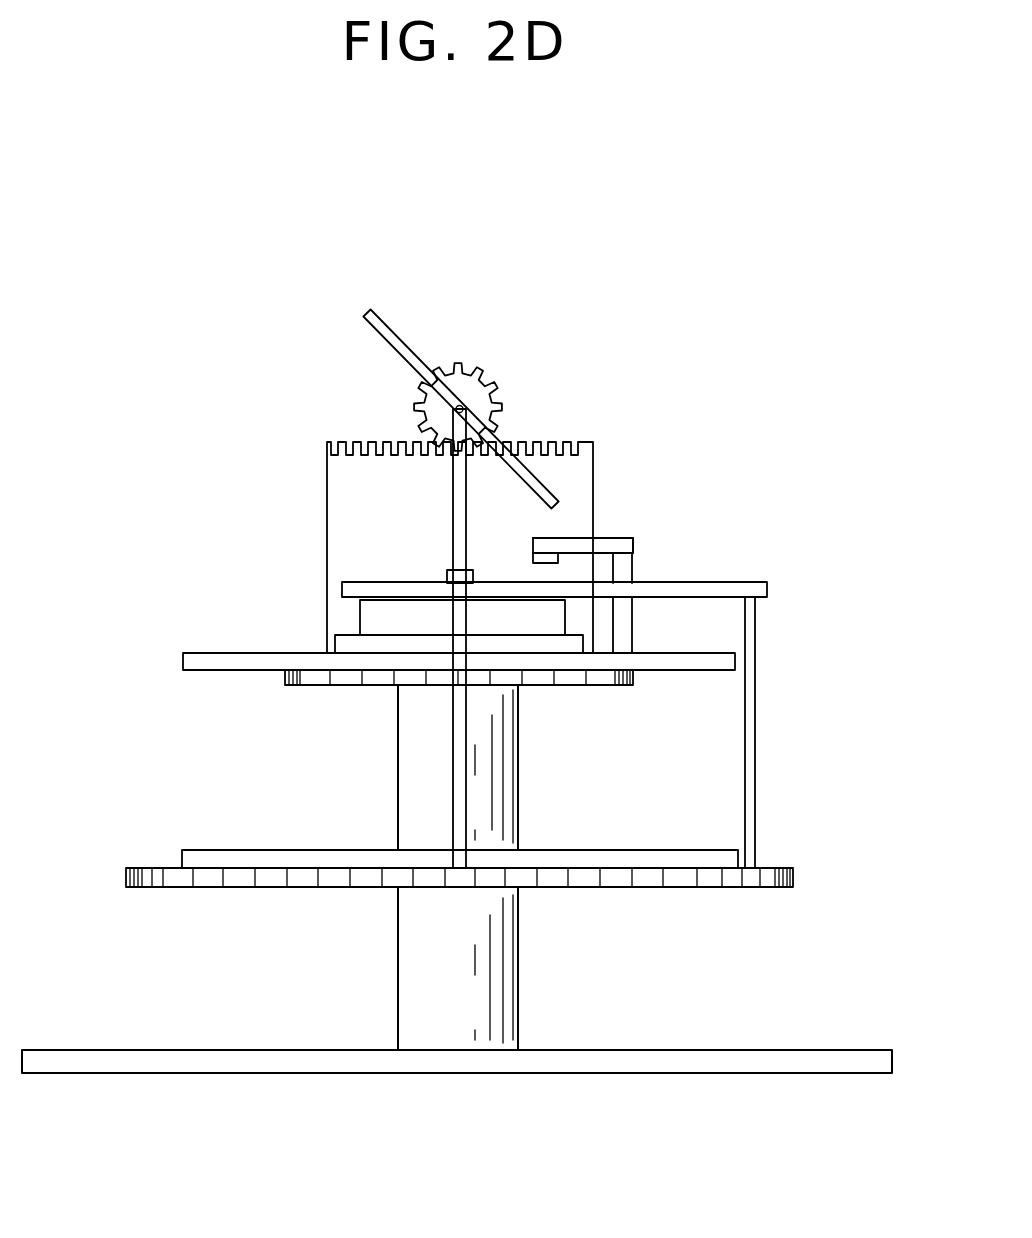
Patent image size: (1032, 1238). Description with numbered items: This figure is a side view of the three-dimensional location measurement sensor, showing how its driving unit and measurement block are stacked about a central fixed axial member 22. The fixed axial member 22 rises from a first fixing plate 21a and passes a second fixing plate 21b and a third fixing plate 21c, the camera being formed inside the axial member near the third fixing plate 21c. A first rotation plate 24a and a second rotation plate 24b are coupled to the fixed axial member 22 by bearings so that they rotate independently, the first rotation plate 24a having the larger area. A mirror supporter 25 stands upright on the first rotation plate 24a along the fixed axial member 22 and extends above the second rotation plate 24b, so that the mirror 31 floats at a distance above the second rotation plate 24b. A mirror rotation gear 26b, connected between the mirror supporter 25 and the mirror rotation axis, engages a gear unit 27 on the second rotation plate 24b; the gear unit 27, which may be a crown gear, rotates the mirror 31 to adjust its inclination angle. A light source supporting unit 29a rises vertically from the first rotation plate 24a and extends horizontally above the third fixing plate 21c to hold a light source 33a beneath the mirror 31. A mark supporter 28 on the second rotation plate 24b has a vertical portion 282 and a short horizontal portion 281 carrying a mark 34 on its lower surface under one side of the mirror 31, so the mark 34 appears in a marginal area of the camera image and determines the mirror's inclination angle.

The first fixing plate 21a is at (865, 1060).
The second fixing plate 21b is at (703, 862).
The third fixing plate 21c is at (343, 642).
The fixed axial member 22 is at (507, 975).
The first rotation plate 24a is at (748, 887).
The second rotation plate 24b is at (585, 690).
The mirror supporter 25 is at (462, 757).
The mirror rotation gear 26b is at (482, 372).
The gear unit 27 is at (340, 481).
The mark supporter 28 is at (630, 568).
The horizontal portion 281 is at (615, 545).
The vertical portion 282 is at (634, 566).
The light source supporting unit 29a is at (770, 590).
The mirror 31 is at (400, 348).
The light source 33a is at (445, 575).
The mark 34 is at (550, 556).